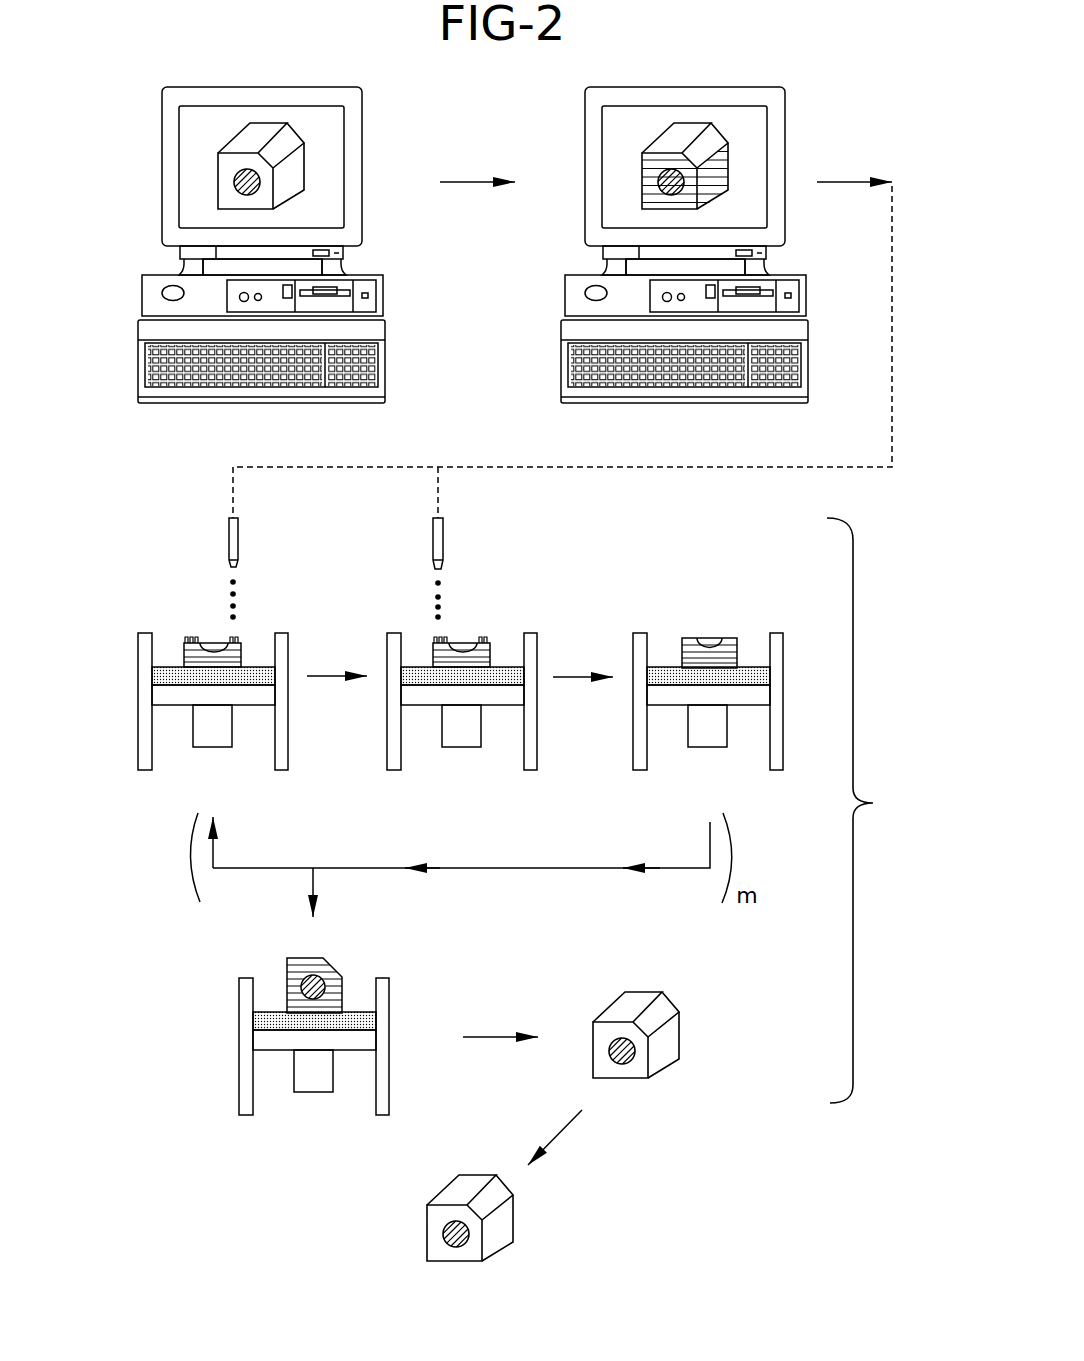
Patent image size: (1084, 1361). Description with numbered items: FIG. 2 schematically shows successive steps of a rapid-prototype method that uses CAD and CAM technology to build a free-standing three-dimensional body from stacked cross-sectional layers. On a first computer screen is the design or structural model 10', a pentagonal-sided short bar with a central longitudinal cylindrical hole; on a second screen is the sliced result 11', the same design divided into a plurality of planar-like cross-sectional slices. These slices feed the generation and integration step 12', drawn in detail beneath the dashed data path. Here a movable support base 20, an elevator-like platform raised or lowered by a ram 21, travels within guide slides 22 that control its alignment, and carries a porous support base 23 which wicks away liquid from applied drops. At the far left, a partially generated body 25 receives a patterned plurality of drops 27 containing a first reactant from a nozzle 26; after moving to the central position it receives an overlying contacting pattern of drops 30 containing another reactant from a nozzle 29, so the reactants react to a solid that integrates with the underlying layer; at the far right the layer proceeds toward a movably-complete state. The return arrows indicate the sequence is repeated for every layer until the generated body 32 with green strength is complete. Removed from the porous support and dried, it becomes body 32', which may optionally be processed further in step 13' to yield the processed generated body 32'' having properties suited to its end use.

The design or structural model or body 10' is at (322, 166).
The sliced result 11' is at (745, 166).
The multiple layer slice generation and integration step 12' is at (871, 810).
The optional further processing step 13' is at (513, 1218).
The movable support base 20 is at (180, 700).
The ram 21 is at (217, 738).
The guide slides 22 is at (143, 739).
The porous support base 23 is at (172, 672).
The partially generated body 25 is at (238, 652).
The nozzle 26 is at (240, 538).
The drops 27 is at (233, 595).
The nozzle 29 is at (444, 538).
The drops 30 is at (437, 597).
The generated body 32 is at (285, 968).
The body 32' is at (671, 1025).
The optionally processed generated body 32'' is at (513, 1188).